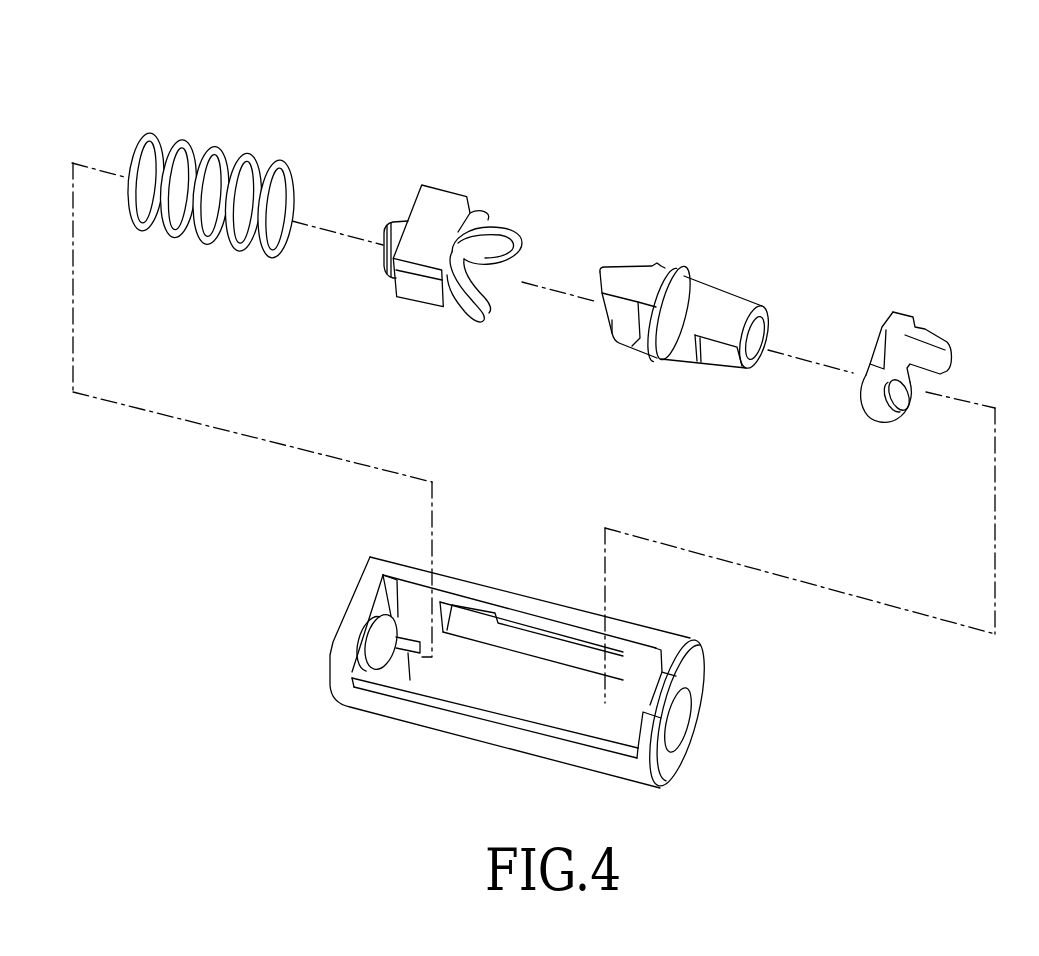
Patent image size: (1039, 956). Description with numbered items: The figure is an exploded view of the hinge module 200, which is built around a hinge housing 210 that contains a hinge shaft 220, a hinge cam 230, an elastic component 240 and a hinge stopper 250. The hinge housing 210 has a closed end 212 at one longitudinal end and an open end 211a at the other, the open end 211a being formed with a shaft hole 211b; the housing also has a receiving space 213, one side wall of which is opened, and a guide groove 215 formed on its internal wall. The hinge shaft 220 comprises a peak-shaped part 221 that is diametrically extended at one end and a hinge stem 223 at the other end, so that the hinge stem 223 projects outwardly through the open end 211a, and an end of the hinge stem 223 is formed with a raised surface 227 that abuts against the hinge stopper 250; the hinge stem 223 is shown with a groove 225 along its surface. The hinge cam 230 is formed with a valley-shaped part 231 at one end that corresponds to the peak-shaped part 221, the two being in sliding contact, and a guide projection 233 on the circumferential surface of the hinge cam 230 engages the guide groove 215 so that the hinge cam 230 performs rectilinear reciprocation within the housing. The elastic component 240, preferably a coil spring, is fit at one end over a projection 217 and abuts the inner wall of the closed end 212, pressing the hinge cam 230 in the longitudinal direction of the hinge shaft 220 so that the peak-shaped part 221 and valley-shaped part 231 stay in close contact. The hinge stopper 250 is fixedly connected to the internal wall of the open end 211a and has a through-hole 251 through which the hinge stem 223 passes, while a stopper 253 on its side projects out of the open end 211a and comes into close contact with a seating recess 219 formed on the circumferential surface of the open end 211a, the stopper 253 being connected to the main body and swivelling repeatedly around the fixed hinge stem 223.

The hinge module 200 is at (739, 82).
The hinge housing 210 is at (515, 662).
The open end 211a is at (693, 675).
The shaft hole 211b is at (679, 732).
The closed end 212 is at (352, 600).
The receiving space 213 is at (490, 700).
The guide groove 215 is at (473, 606).
The projection 217 is at (390, 572).
The seating recess 219 is at (661, 647).
The hinge shaft 220 is at (681, 300).
The peak-shaped part 221 is at (610, 334).
The hinge stem 223 is at (724, 312).
The guide groove 225 is at (715, 357).
The raised surface 227 is at (681, 275).
The hinge cam 230 is at (458, 232).
The valley-shaped part 231 is at (508, 282).
The guide projection 233 is at (476, 212).
The elastic component 240 is at (245, 145).
The hinge stopper 250 is at (928, 343).
The through-hole 251 is at (901, 396).
The stopper 253 is at (925, 348).